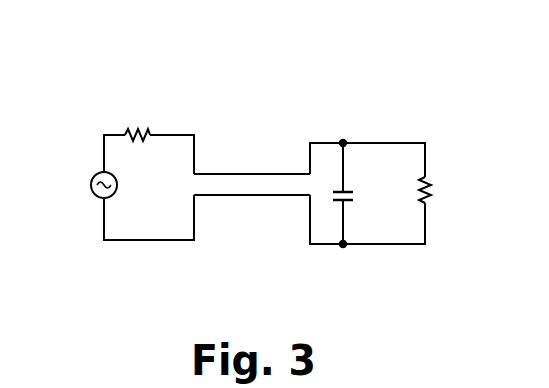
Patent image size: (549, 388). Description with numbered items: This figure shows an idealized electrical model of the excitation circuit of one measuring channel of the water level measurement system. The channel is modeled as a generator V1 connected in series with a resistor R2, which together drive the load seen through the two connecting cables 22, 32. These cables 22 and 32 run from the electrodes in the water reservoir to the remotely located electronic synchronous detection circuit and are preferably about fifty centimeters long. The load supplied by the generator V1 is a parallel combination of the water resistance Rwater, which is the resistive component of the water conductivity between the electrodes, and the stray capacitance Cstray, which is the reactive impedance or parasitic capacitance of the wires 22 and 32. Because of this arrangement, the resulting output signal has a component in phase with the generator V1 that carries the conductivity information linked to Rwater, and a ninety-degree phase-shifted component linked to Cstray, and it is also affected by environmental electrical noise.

The cable 22 is at (243, 173).
The cable 32 is at (255, 197).
The generator V1 is at (87, 179).
The series resistor R2 is at (140, 119).
The stray capacitance Cstray is at (373, 193).
The water resistance Rwater is at (461, 185).